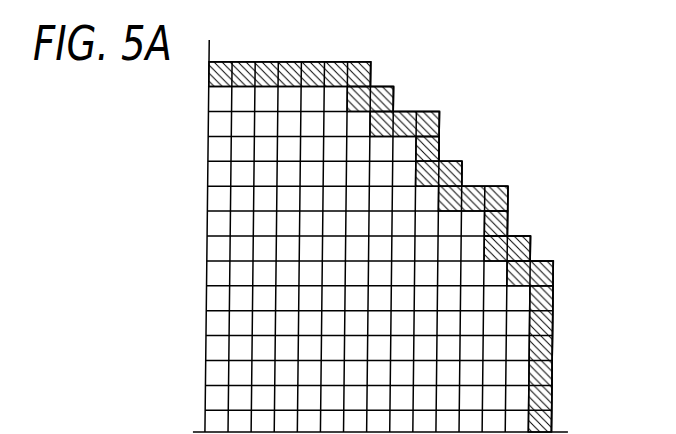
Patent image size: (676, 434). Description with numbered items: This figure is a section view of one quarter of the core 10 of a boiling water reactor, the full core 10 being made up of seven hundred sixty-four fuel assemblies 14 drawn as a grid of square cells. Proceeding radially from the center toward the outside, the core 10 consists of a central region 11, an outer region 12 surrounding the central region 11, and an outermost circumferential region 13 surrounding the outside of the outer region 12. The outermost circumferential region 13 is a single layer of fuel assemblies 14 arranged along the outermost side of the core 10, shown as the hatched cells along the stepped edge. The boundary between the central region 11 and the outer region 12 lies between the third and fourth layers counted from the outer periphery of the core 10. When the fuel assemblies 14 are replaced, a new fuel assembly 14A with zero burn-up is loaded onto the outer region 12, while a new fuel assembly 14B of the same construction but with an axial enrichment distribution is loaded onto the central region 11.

The core 10 is at (374, 49).
The central region 11 is at (240, 204).
The outer region 12 is at (405, 152).
The outermost circumferential region 13 is at (271, 62).
The fuel assemblies 14 is at (237, 348).
The new fuel assembly loaded onto the outer region 14A is at (472, 249).
The new fuel assembly loaded onto the central region 14B is at (472, 350).